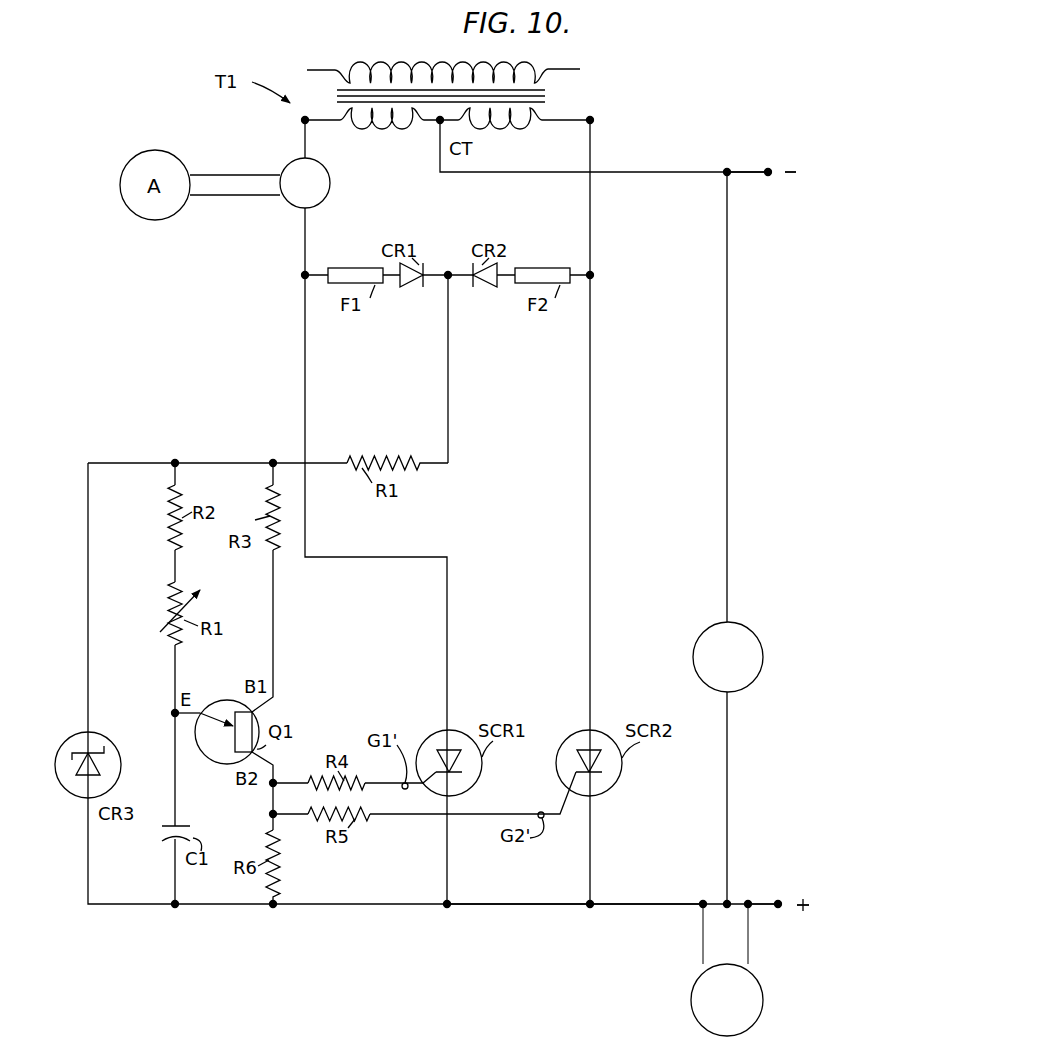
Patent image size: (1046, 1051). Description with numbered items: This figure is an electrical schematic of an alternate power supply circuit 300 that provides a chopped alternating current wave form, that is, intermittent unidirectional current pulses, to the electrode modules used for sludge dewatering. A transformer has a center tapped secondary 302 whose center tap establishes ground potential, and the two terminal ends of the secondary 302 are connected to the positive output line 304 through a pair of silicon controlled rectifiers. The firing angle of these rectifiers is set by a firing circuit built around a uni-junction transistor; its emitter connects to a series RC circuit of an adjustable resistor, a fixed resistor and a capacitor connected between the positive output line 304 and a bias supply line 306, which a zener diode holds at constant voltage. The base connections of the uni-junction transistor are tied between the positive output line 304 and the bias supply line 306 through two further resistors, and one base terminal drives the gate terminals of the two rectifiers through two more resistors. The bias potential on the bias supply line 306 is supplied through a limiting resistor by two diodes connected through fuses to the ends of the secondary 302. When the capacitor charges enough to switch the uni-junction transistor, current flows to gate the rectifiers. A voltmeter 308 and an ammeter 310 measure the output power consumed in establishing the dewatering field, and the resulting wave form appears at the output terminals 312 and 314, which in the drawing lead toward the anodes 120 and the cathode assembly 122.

The power supply circuit 300 is at (712, 88).
The center tapped secondary 302 is at (552, 106).
The positive output line 304 is at (521, 907).
The bias supply line 306 is at (244, 462).
The voltmeter 308 is at (760, 643).
The ammeter 310 is at (755, 978).
The output terminal 312 is at (777, 899).
The output terminal 314 is at (771, 165).
The anodes 120 is at (869, 902).
The cathode assembly 122 is at (859, 171).